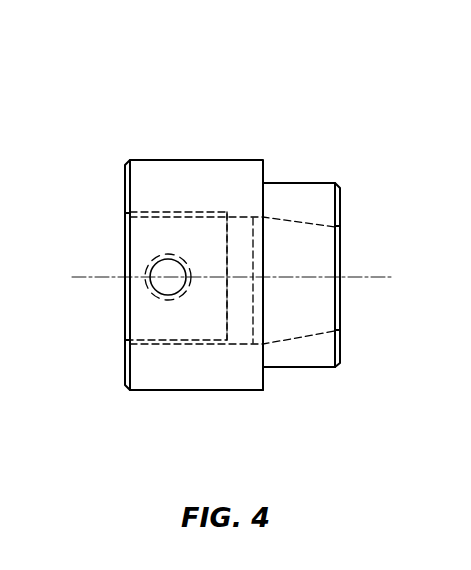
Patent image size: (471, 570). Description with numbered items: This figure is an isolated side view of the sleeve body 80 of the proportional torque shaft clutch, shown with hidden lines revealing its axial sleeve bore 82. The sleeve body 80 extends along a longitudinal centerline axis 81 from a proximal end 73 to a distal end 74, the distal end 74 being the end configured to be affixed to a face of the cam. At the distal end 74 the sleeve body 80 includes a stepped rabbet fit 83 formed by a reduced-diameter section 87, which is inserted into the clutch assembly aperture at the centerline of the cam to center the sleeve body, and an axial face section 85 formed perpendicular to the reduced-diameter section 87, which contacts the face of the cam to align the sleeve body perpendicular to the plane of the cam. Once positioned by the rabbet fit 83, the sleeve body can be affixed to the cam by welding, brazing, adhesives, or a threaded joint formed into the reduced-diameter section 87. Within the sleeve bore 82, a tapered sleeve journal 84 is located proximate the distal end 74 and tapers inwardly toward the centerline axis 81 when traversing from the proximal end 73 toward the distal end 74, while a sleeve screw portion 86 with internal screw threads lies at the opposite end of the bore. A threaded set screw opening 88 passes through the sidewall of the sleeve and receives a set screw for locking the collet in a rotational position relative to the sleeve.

The sleeve body 80 is at (234, 240).
The proximal end 73 is at (101, 203).
The distal end 74 is at (358, 206).
The longitudinal centerline axis 81 is at (369, 277).
The axial sleeve bore 82 is at (146, 213).
The rabbet fit 83 is at (322, 407).
The tapered sleeve journal 84 is at (300, 222).
The axial face section 85 is at (264, 378).
The sleeve screw portion 86 is at (213, 338).
The reduced-diameter section 87 is at (312, 368).
The threaded set screw opening 88 is at (181, 255).